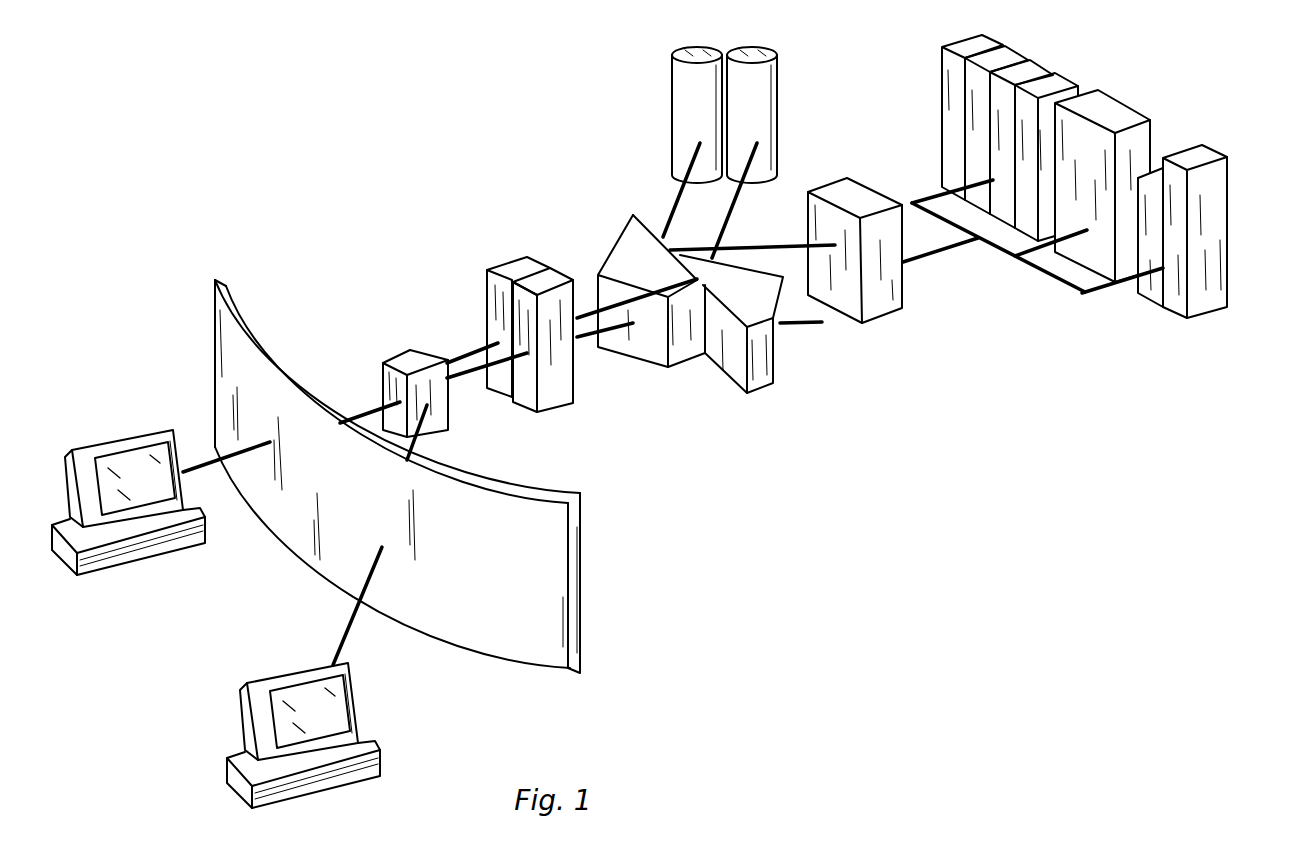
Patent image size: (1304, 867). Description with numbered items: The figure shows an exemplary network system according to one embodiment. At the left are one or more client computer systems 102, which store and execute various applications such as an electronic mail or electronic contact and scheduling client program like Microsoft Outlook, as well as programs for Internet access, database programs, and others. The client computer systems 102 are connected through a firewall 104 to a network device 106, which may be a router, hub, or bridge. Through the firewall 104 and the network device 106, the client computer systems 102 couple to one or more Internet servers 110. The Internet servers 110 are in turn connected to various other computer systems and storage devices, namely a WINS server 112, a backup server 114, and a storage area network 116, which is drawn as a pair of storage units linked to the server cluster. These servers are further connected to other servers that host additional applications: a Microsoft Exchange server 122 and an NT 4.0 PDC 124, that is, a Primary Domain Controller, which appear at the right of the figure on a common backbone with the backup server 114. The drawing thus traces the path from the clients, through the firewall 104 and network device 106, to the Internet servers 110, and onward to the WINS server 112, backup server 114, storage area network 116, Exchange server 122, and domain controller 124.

The client computer system 102 is at (147, 562).
The firewall 104 is at (226, 281).
The network device 106 is at (408, 360).
The Internet servers 110 is at (505, 265).
The WINS server 112 is at (690, 321).
The backup server 114 is at (885, 313).
The storage area network (SAN) 116 is at (752, 33).
The Microsoft Exchange server 122 is at (1202, 317).
The NT 4.0 PDC (Primary Domain Controller) 124 is at (1063, 75).